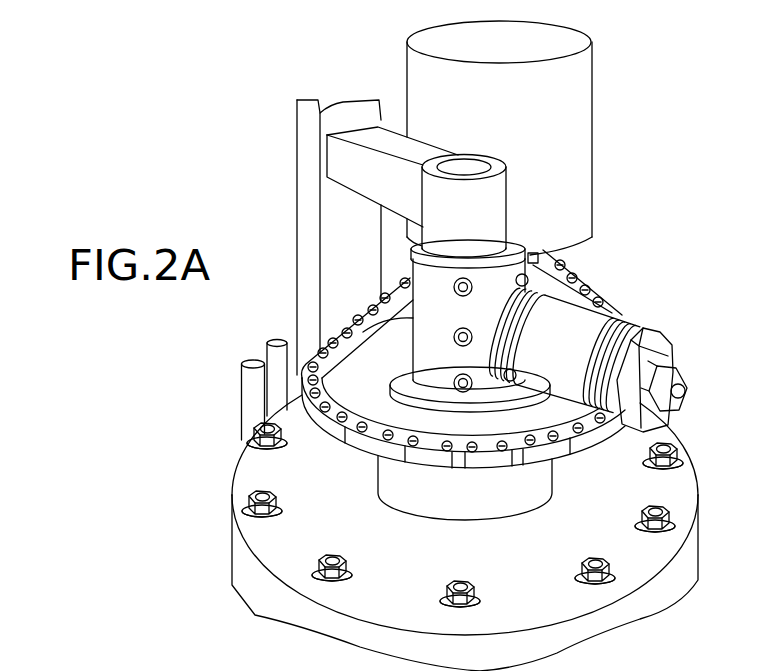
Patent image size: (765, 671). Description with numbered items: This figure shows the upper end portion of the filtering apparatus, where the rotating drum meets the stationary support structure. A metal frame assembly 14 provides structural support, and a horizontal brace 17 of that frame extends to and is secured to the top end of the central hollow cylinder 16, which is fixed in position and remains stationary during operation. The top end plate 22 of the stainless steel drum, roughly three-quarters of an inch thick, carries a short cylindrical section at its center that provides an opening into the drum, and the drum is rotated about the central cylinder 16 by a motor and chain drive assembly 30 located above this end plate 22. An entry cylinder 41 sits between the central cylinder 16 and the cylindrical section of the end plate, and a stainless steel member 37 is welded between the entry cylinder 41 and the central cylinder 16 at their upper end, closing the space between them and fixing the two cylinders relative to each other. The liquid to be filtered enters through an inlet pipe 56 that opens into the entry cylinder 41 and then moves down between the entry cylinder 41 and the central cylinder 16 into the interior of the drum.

The metal frame assembly 14 is at (298, 168).
The horizontal brace 17 is at (365, 154).
The central hollow cylinder 16 is at (495, 185).
The motor and chain drive assembly 30 is at (600, 216).
The stainless steel member 37 is at (420, 245).
The entry cylinder 41 is at (422, 335).
The inlet pipe 56 is at (620, 322).
The top end plate 22 is at (675, 487).